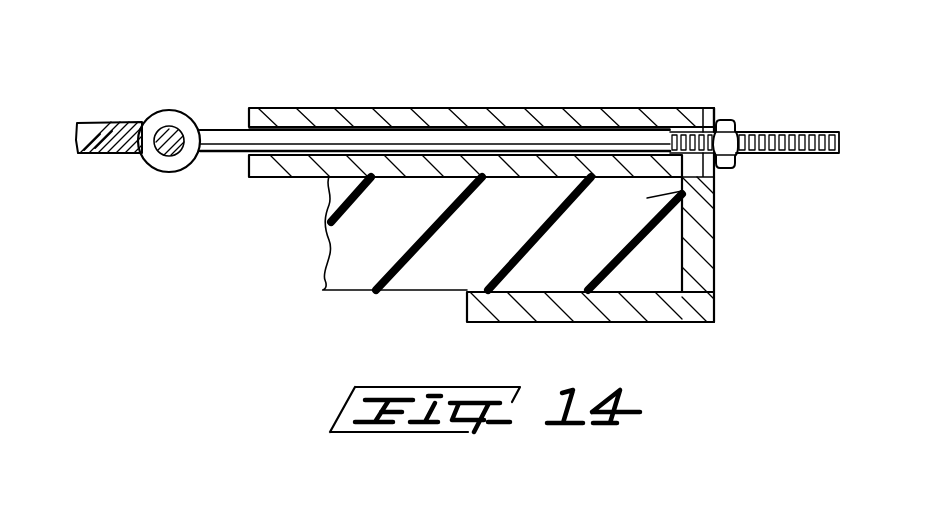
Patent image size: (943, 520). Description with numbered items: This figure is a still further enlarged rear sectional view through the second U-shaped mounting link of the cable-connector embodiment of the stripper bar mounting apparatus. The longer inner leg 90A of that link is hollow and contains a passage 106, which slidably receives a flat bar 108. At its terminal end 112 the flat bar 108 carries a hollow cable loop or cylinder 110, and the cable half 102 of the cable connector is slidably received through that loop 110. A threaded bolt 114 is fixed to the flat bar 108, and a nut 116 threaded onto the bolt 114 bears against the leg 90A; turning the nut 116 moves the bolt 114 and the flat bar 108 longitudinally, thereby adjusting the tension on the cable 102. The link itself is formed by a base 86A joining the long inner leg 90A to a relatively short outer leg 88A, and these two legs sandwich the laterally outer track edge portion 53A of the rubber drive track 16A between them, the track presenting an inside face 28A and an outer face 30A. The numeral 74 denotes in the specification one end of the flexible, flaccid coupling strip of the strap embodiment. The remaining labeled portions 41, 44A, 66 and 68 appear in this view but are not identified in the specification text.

The cable half segment 102 is at (160, 130).
The hollow cable loop or cylinder 110 is at (160, 166).
The terminal end of flat bar 112 is at (205, 130).
The flat bar 108 is at (442, 142).
The longer inner leg 90A is at (470, 110).
The passage 106 is at (603, 134).
The housing 44A is at (344, 108).
The threaded portion 68 is at (676, 132).
The end wall 66 is at (702, 131).
The nut 116 is at (727, 120).
The threaded bolt 114 is at (800, 154).
The inner wall 53A is at (647, 198).
The side wall 86A is at (708, 230).
The bottom plate 88A is at (598, 323).
The block 16A is at (352, 238).
The first strip 28A is at (424, 172).
The second strip 30A is at (372, 288).
The end of flexible strip 74 is at (674, 270).
The assembly 41 is at (318, 322).